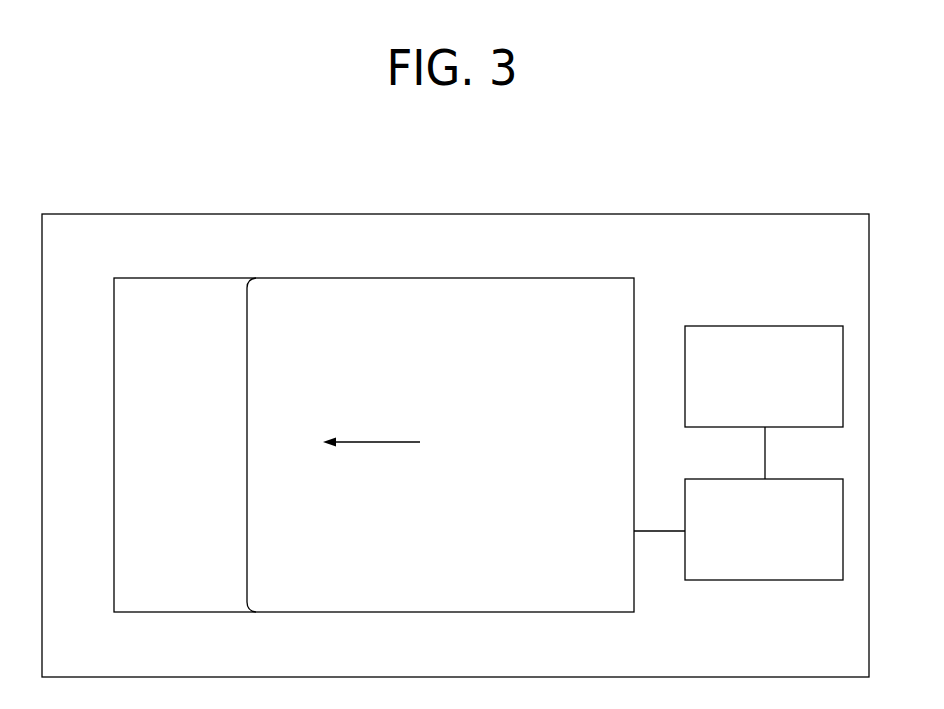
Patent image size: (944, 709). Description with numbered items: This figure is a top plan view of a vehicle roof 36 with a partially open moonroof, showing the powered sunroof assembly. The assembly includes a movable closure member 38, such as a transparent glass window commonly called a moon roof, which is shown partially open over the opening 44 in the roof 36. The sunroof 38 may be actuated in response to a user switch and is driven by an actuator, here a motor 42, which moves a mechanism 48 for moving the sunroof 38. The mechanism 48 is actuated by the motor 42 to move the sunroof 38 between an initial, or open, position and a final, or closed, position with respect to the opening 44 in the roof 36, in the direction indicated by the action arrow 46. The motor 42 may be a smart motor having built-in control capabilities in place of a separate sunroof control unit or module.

The roof 36 is at (501, 258).
The movable closure member 38 is at (456, 532).
The motor 42 is at (755, 326).
The opening 44 is at (196, 434).
The action arrow 46 is at (380, 442).
The mechanism 48 is at (777, 580).